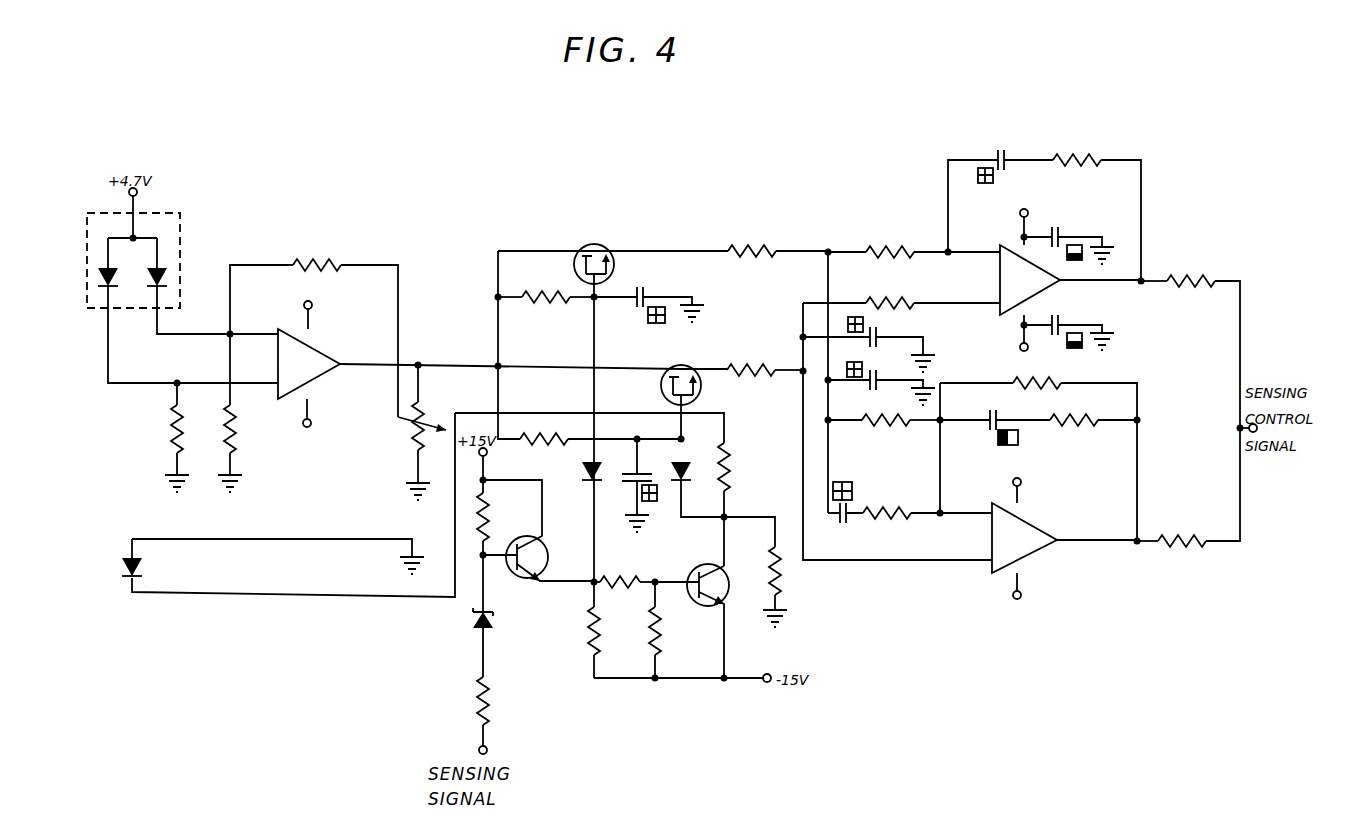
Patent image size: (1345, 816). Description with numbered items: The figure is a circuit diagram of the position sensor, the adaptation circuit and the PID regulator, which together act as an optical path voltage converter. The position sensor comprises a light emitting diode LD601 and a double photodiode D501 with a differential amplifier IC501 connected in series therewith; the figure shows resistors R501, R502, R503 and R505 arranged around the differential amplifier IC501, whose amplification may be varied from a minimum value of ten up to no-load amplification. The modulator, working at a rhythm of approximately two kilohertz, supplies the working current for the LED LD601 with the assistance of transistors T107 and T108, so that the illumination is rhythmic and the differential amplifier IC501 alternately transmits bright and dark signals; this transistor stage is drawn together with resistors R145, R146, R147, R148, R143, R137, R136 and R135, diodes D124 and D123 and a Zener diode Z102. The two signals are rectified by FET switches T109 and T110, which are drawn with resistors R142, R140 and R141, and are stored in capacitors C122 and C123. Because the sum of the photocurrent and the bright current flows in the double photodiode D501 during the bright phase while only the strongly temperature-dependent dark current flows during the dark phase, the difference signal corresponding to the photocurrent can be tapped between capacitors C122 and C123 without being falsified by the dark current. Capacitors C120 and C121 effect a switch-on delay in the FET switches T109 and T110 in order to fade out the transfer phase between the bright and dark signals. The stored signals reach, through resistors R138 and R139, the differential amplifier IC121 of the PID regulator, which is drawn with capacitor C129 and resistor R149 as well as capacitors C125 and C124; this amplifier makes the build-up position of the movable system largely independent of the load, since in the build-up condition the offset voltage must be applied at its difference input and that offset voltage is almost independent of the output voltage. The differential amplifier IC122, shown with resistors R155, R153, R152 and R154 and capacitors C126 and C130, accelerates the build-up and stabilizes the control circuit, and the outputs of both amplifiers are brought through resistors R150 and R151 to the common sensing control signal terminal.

The double photodiode D501 is at (181, 216).
The feedback resistor R501 is at (340, 250).
The differential amplifier IC501 is at (309, 364).
The resistor R502 is at (168, 427).
The resistor R503 is at (236, 440).
The potentiometer R505 is at (401, 432).
The light emitting diode LD601 is at (141, 569).
The FET switch T110 is at (610, 232).
The resistor R142 is at (546, 284).
The capacitor C120 is at (648, 275).
The FET switch T109 is at (702, 368).
The resistor R140 is at (766, 234).
The resistor R141 is at (762, 355).
The resistor R137 is at (570, 441).
The diode D124 is at (580, 478).
The capacitor C121 is at (632, 478).
The diode D123 is at (698, 490).
The resistor R136 is at (730, 463).
The resistor R135 is at (780, 582).
The transistor T107 is at (521, 579).
The transistor T108 is at (728, 598).
The resistor R145 is at (510, 526).
The resistor R147 is at (624, 568).
The resistor R146 is at (616, 630).
The resistor R148 is at (679, 630).
The zener diode Z102 is at (488, 614).
The resistor R143 is at (488, 700).
The resistor R138 is at (902, 238).
The resistor R139 is at (901, 291).
The capacitor C129 is at (1014, 136).
The feedback resistor R149 is at (1091, 142).
The differential amplifier IC121 is at (1030, 280).
The capacitor C125 is at (1058, 226).
The capacitor C124 is at (1060, 322).
The resistor R150 is at (1213, 259).
The capacitor C123 is at (878, 325).
The capacitor C122 is at (868, 373).
The resistor R155 is at (868, 428).
The feedback resistor R153 is at (1048, 376).
The capacitor C126 is at (993, 410).
The resistor R152 is at (1068, 432).
The capacitor C130 is at (850, 500).
The resistor R154 is at (866, 506).
The differential amplifier IC122 is at (1024, 537).
The resistor R151 is at (1196, 527).